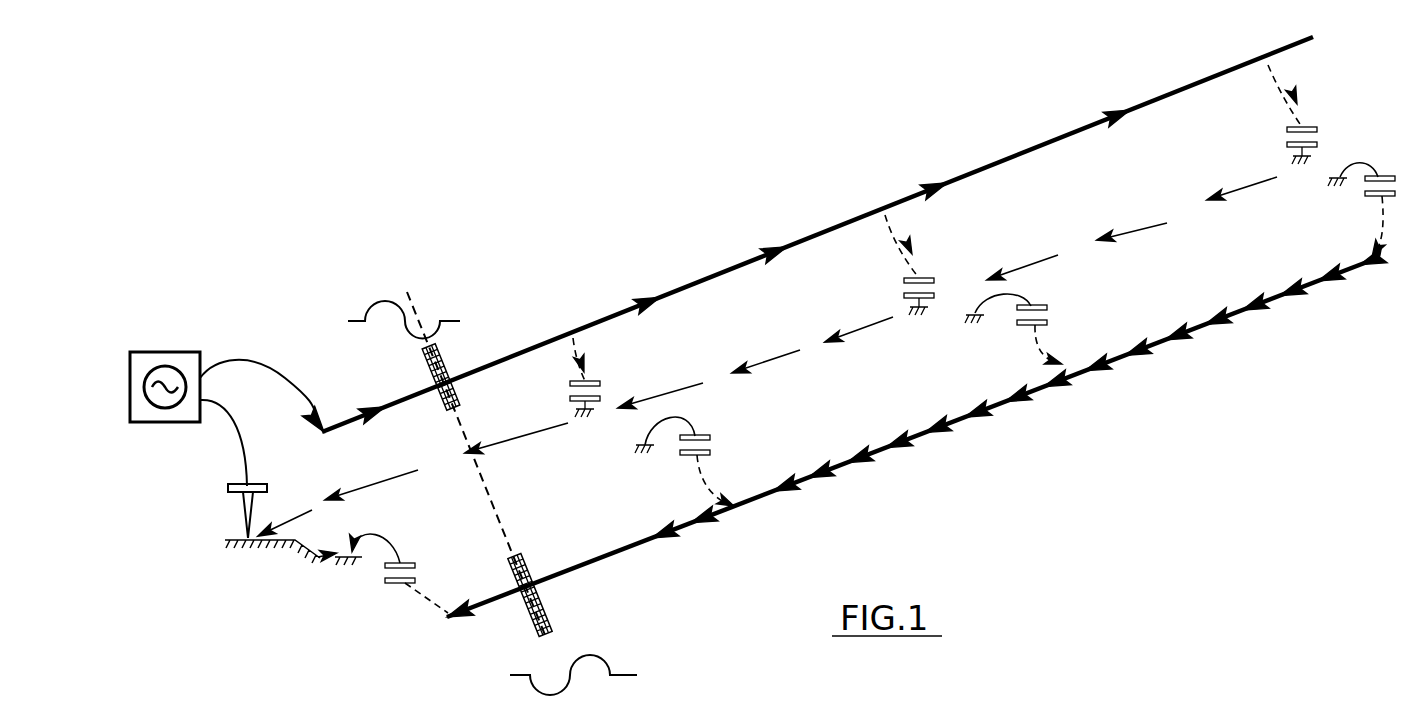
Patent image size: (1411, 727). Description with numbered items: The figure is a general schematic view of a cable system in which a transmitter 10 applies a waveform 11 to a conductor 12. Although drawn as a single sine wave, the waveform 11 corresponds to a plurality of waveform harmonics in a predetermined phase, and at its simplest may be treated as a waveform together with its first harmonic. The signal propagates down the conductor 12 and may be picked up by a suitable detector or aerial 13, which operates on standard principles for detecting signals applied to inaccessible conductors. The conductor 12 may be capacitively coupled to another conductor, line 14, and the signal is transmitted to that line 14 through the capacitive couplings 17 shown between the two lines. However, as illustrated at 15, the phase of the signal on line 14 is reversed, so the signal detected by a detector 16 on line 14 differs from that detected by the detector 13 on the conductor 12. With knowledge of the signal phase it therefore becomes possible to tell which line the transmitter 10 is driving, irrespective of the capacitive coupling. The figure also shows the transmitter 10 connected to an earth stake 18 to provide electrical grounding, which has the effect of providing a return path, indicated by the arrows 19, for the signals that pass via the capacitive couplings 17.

The transmitter 10 is at (130, 387).
The waveform 11 is at (378, 304).
The conductor 12 is at (612, 318).
The detector (aerial) 13 is at (460, 358).
The line 14 is at (904, 447).
The phase-reversed signal 15 is at (600, 668).
The detector 16 is at (560, 612).
The capacitive couplings 17 is at (601, 386).
The earth stake 18 is at (243, 513).
The arrows indicating return path 19 is at (1138, 232).